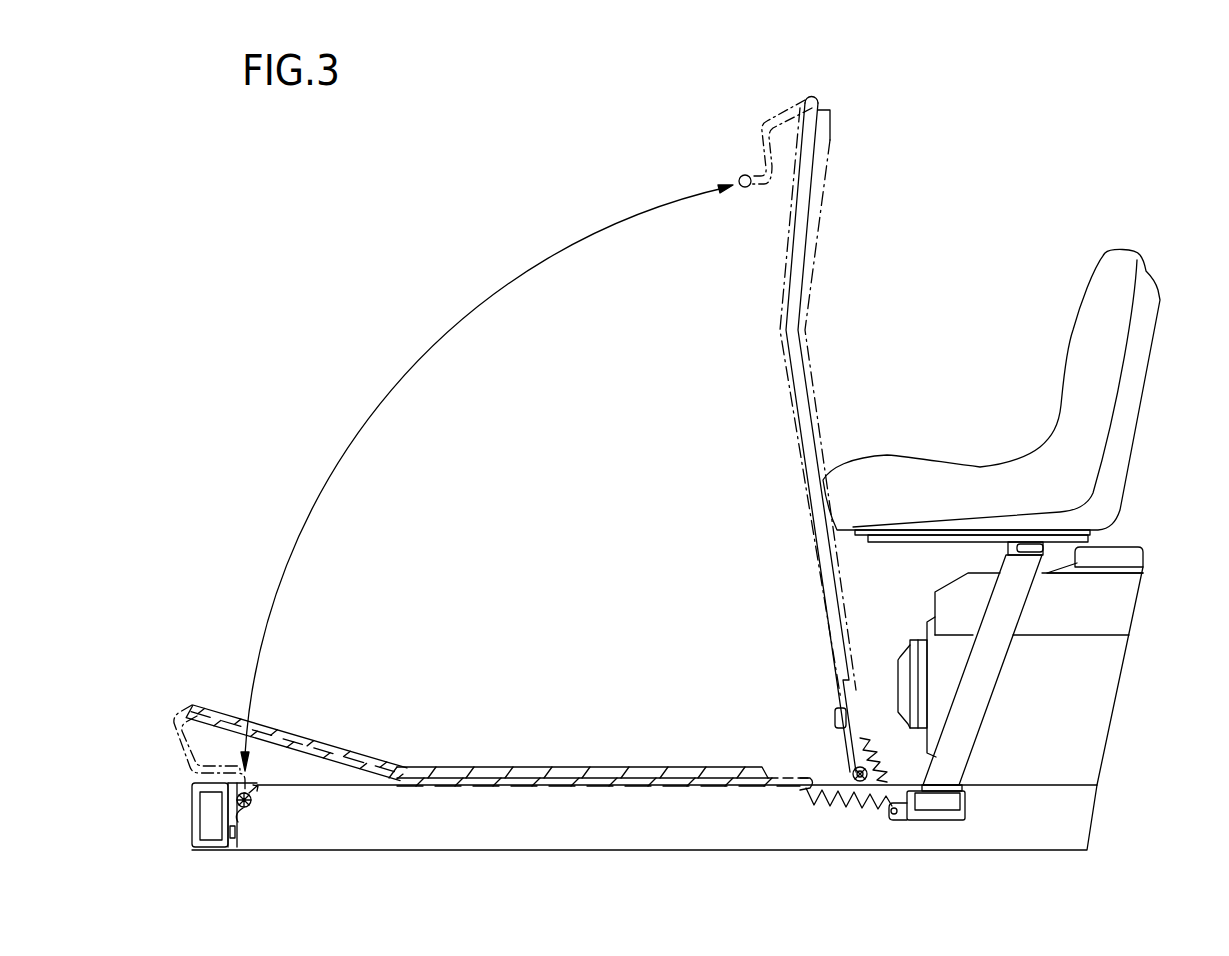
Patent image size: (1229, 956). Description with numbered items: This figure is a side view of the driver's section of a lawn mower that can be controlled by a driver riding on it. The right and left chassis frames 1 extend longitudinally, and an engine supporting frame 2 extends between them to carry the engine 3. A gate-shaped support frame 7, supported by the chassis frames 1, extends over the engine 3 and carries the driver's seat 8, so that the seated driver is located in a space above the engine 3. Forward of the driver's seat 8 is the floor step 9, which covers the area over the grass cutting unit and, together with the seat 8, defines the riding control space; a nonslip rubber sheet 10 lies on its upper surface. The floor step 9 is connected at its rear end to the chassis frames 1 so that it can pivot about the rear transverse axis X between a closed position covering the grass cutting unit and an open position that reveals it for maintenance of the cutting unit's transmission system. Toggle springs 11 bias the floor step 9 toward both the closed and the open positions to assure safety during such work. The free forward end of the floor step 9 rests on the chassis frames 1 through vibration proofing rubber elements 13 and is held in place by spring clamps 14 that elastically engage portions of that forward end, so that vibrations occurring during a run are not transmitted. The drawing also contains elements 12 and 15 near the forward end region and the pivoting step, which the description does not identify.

The chassis frames 1 is at (1063, 792).
The engine supporting frame 2 is at (968, 803).
The engine 3 is at (1132, 538).
The support frame 7 is at (1008, 663).
The driver's seat 8 is at (1065, 372).
The floor step 9 is at (598, 777).
The nonslip rubber sheet 10 is at (487, 770).
The toggle springs 11 is at (843, 800).
The side bracket 12 is at (192, 807).
The vibration proofing rubber elements 13 is at (213, 772).
The spring clamps 14 is at (250, 807).
The pivotable bar 15 is at (741, 190).
The transverse axis X is at (847, 767).